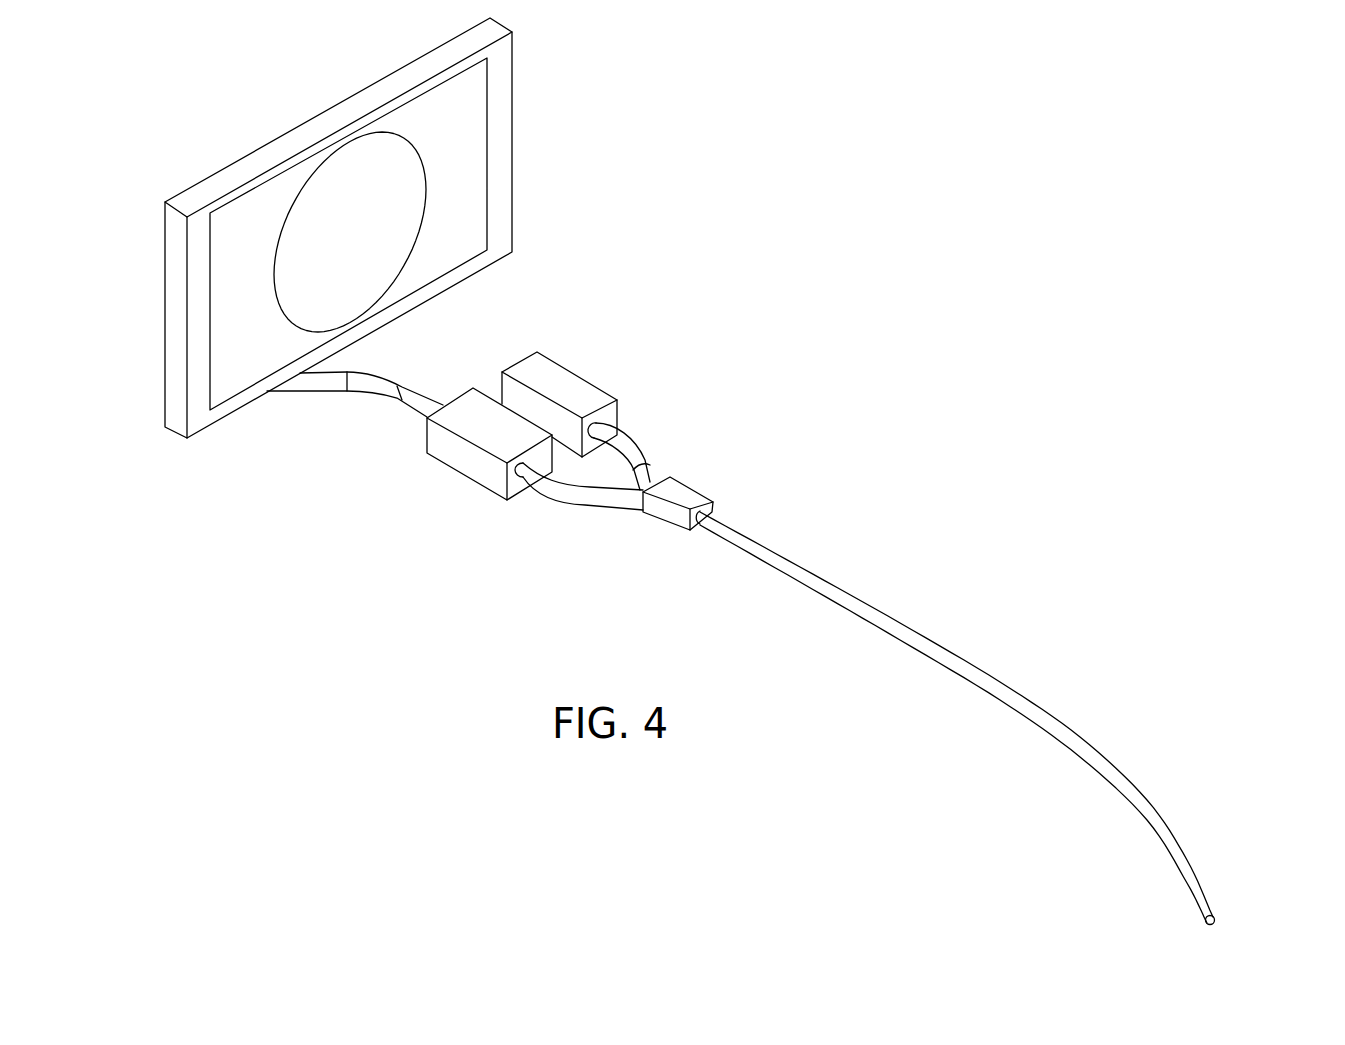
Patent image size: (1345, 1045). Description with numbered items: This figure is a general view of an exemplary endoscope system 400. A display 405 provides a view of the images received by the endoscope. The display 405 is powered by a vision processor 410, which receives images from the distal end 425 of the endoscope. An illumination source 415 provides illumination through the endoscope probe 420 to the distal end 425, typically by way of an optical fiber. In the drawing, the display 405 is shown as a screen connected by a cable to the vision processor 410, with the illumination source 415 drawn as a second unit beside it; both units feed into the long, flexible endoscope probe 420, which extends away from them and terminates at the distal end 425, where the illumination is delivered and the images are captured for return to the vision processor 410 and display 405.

The endoscope system 400 is at (867, 312).
The display 405 is at (512, 166).
The vision processor 410 is at (442, 460).
The illumination source 415 is at (563, 363).
The endoscope probe 420 is at (795, 562).
The distal end 425 is at (1218, 927).